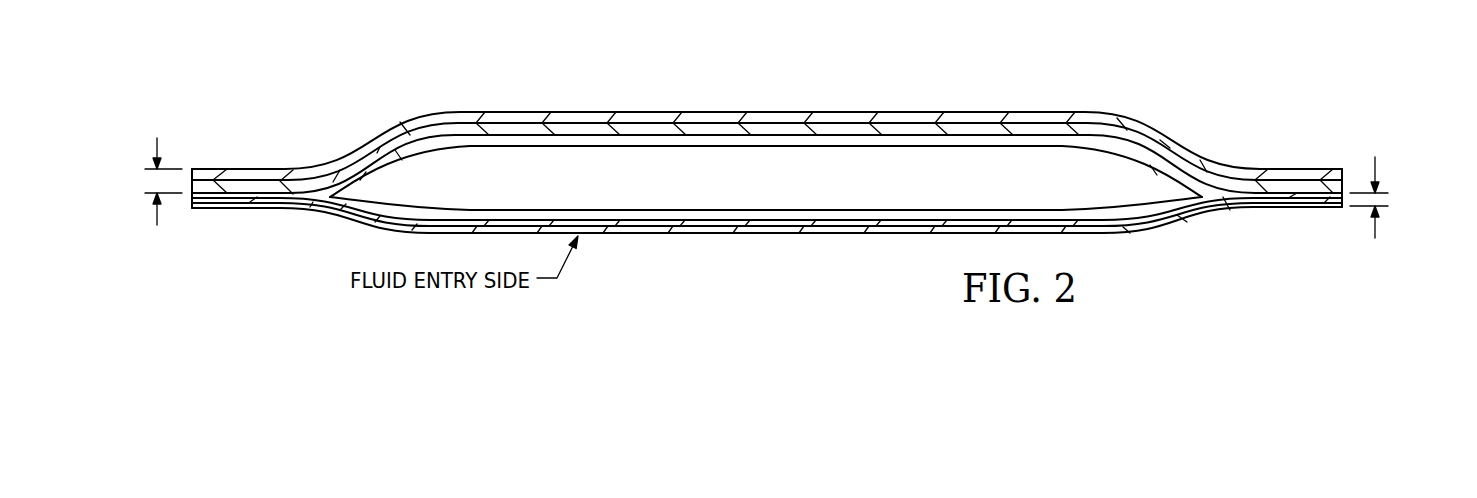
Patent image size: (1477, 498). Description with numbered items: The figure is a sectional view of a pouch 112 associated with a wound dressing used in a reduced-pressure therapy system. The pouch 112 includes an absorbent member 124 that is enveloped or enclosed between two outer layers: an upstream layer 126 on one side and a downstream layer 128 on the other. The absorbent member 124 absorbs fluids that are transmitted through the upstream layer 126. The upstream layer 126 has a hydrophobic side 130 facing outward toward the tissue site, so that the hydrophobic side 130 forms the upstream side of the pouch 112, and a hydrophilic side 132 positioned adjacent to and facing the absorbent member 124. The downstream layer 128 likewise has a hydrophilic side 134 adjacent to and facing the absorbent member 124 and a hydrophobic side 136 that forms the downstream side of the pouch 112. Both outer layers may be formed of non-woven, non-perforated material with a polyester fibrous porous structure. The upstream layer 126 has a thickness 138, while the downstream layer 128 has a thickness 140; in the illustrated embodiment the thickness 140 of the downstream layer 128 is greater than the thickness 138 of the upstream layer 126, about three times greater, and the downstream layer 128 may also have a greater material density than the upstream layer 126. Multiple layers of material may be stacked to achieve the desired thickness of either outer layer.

The pouch 112 is at (767, 158).
The absorbent member 124 is at (790, 192).
The upstream layer 126 is at (1401, 198).
The downstream layer 128 is at (133, 180).
The hydrophobic side 130 is at (698, 233).
The hydrophilic side 132 is at (835, 233).
The hydrophilic side 134 is at (835, 130).
The hydrophobic side 136 is at (700, 117).
The thickness 138 is at (1376, 170).
The thickness 140 is at (157, 148).